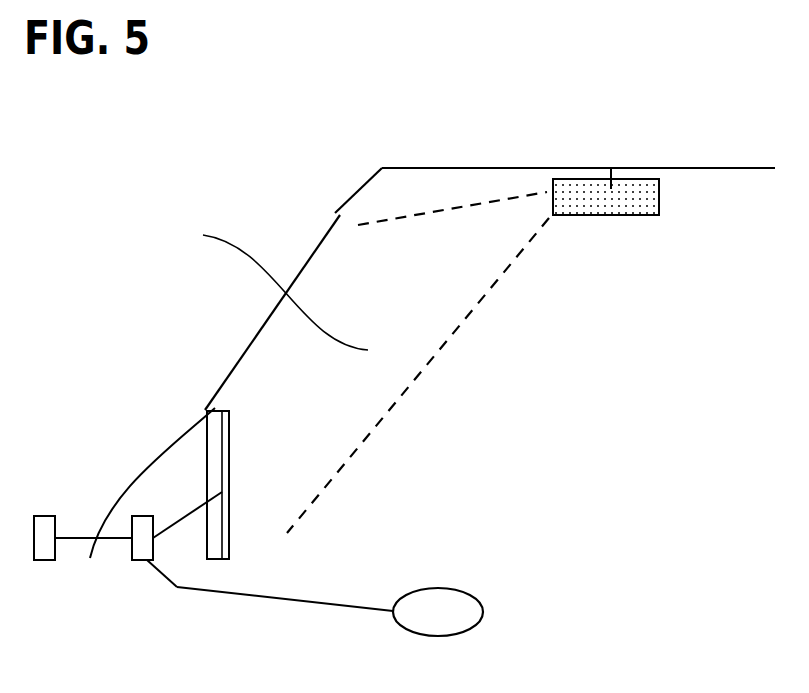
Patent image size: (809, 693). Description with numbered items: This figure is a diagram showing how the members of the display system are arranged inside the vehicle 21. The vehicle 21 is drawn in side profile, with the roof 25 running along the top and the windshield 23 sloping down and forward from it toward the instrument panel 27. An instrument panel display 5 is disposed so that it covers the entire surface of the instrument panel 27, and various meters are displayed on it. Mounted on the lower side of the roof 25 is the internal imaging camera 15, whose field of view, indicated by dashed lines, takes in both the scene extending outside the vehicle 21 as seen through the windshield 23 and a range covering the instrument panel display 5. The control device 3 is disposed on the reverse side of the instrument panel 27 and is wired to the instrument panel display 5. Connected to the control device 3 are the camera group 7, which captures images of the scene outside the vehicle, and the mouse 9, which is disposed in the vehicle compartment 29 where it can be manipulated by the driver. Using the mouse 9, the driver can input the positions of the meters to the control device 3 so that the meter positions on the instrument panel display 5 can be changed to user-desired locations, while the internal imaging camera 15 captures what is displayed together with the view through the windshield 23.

The control device 3 is at (143, 560).
The instrument panel display 5 is at (230, 421).
The camera group 7 is at (43, 560).
The mouse 9 is at (483, 600).
The internal imaging camera 15 is at (659, 196).
The vehicle 21 is at (716, 168).
The windshield 23 is at (320, 247).
The roof 25 is at (458, 168).
The instrument panel 27 is at (205, 435).
The vehicle compartment 29 is at (270, 282).